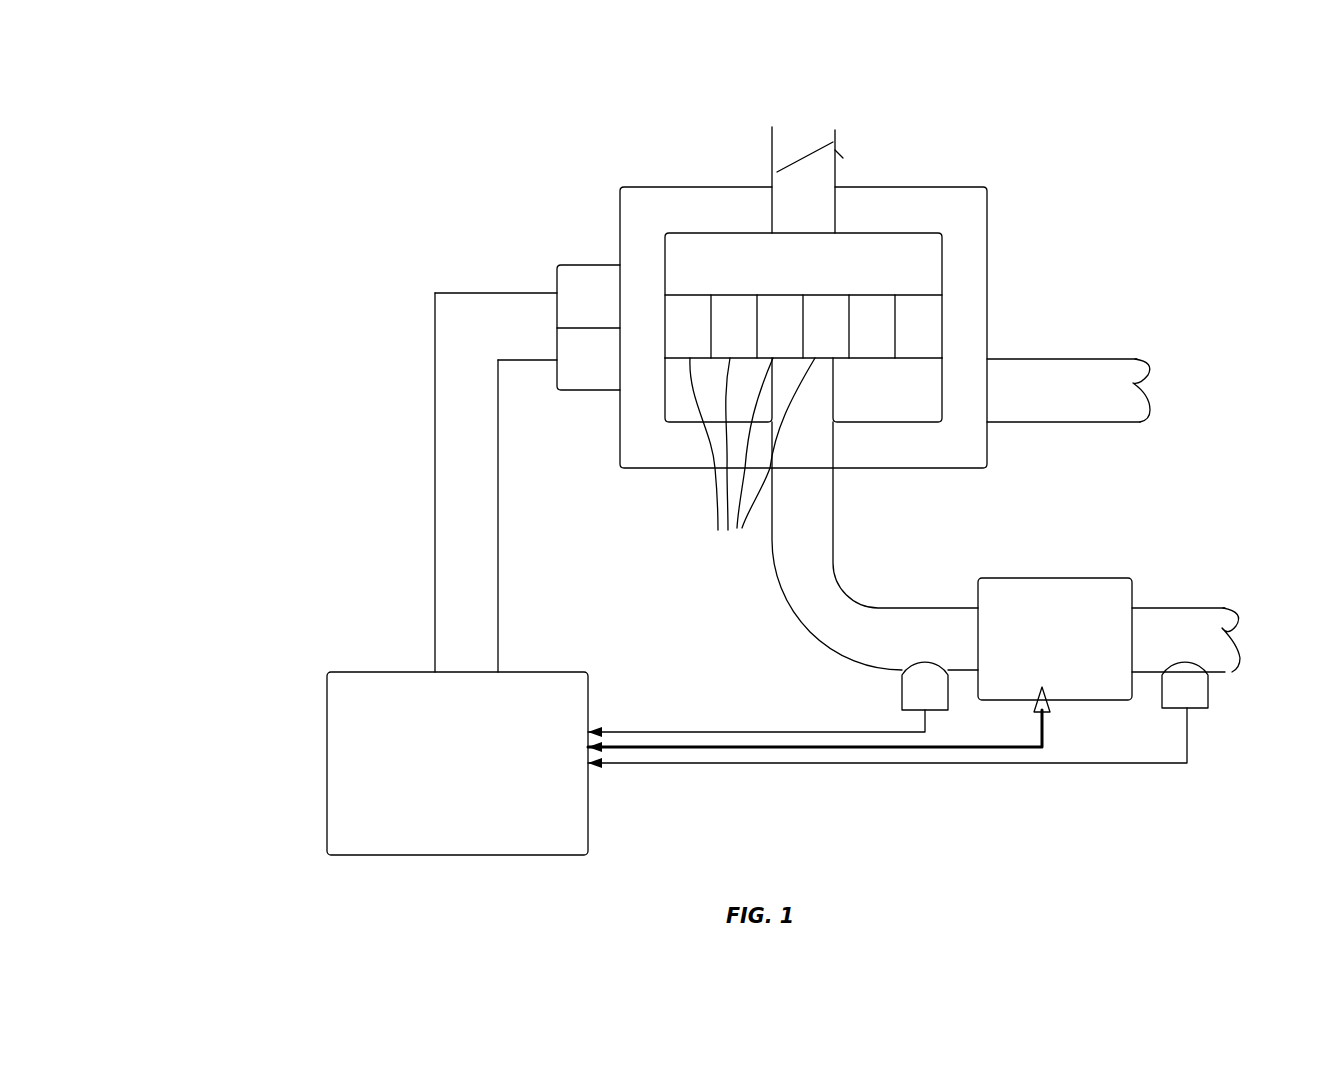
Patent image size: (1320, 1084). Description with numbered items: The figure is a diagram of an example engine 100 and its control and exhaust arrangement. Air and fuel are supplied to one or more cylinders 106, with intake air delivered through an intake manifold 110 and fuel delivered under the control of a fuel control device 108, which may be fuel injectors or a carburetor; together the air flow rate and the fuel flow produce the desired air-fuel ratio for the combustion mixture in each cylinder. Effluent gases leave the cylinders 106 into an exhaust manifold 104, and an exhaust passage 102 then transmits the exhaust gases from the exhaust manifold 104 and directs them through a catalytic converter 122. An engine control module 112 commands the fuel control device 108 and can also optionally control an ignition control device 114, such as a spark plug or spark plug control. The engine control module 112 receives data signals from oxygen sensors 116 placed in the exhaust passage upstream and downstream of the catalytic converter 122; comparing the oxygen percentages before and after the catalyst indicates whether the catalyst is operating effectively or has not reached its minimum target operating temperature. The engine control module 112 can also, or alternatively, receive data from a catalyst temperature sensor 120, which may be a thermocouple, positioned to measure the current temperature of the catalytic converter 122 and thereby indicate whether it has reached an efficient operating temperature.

The engine 100 is at (312, 165).
The exhaust passage 102 is at (853, 605).
The exhaust manifold 104 is at (897, 397).
The cylinders 106 is at (1070, 315).
The fuel control device 108 is at (583, 282).
The intake manifold 110 is at (913, 280).
The engine control module 112 is at (436, 783).
The ignition control device 114 is at (577, 342).
The oxygen sensors 116 is at (935, 690).
The catalyst temperature sensor 120 is at (1045, 712).
The catalytic converter 122 is at (1040, 677).